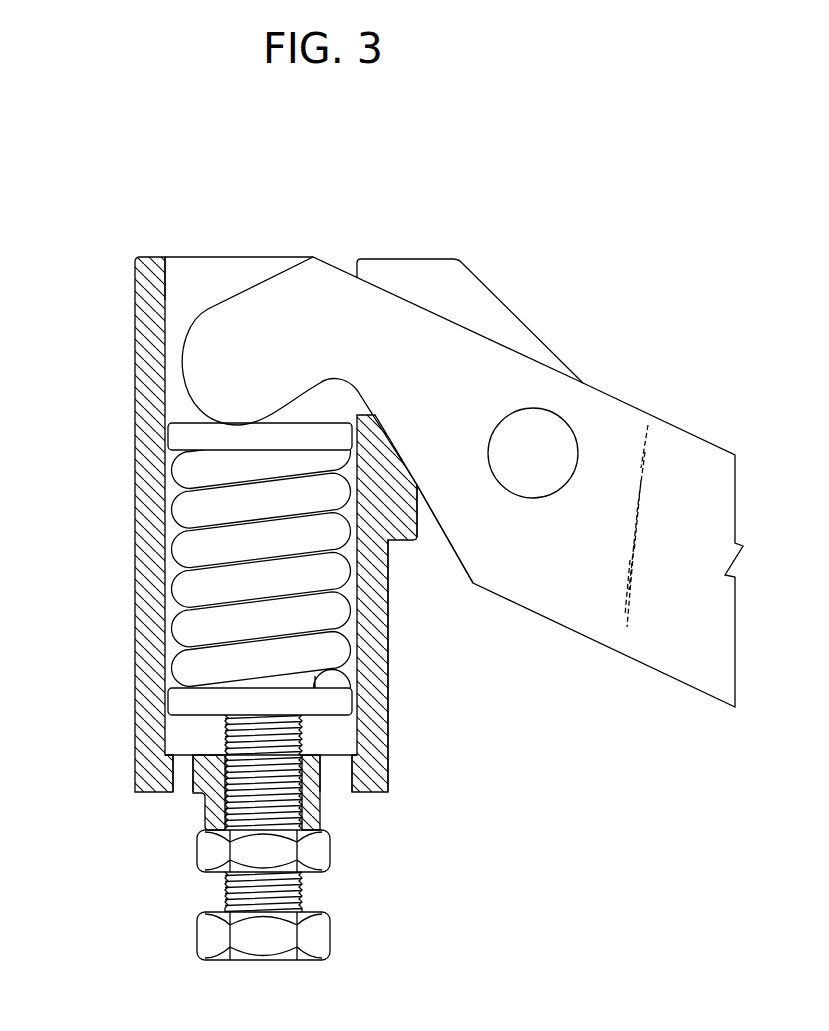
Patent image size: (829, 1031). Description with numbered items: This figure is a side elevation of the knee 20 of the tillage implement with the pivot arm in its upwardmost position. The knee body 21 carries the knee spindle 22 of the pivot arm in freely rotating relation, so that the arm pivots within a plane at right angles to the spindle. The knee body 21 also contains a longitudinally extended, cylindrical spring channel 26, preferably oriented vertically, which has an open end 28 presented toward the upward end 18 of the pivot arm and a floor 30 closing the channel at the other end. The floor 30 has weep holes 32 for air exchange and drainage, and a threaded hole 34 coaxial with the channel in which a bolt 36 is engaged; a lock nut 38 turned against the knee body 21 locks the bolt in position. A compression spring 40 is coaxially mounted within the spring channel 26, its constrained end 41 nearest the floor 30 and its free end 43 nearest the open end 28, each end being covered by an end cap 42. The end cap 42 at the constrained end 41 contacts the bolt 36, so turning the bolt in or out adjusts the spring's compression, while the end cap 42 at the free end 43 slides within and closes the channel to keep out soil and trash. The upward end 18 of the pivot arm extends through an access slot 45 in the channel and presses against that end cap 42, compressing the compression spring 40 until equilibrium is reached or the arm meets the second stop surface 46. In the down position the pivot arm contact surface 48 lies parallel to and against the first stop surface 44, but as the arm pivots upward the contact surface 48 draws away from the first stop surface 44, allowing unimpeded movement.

The upward end 18 is at (462, 438).
The knee 20 is at (273, 518).
The knee body 21 is at (388, 728).
The knee spindle 22 is at (547, 427).
The spring channel 26 is at (165, 332).
The open end 28 is at (165, 282).
The floor 30 is at (310, 755).
The weep holes 32 is at (177, 793).
The threaded hole 34 is at (298, 807).
The bolt 36 is at (302, 888).
The lock nut 38 is at (197, 858).
The compression spring 40 is at (190, 561).
The constrained end 41 is at (170, 673).
The end cap 42 is at (170, 431).
The free end 43 is at (170, 469).
The first stop surface 44 is at (417, 513).
The access slot 45 is at (397, 270).
The second stop surface 46 is at (388, 433).
The pivot arm contact surface 48 is at (463, 569).